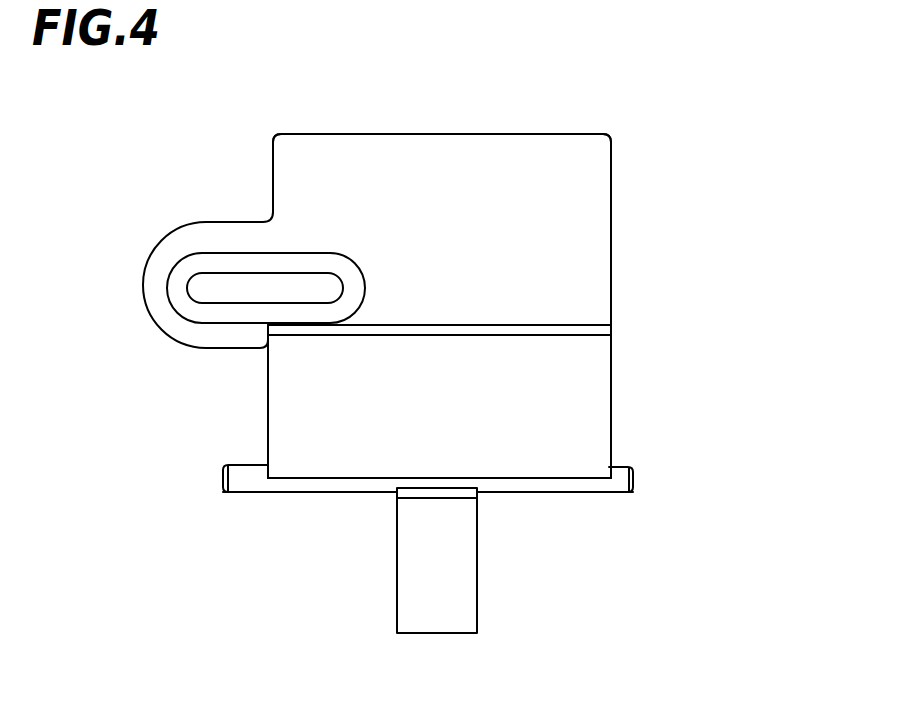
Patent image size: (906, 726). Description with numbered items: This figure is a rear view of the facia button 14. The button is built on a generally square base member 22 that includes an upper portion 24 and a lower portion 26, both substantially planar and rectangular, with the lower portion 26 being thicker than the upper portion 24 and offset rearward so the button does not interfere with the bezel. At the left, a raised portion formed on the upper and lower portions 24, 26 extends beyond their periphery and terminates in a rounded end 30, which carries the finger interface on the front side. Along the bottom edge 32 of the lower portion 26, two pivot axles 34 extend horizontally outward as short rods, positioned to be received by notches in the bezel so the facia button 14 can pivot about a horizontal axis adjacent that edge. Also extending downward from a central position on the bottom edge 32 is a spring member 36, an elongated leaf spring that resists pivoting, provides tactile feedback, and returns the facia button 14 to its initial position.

The facia button 14 is at (126, 141).
The base member 22 is at (680, 285).
The upper portion 24 is at (583, 207).
The lower portion 26 is at (584, 440).
The rounded end 30 is at (145, 298).
The bottom edge 32 is at (333, 541).
The pivot axles 34 is at (243, 485).
The spring member 36 is at (458, 579).